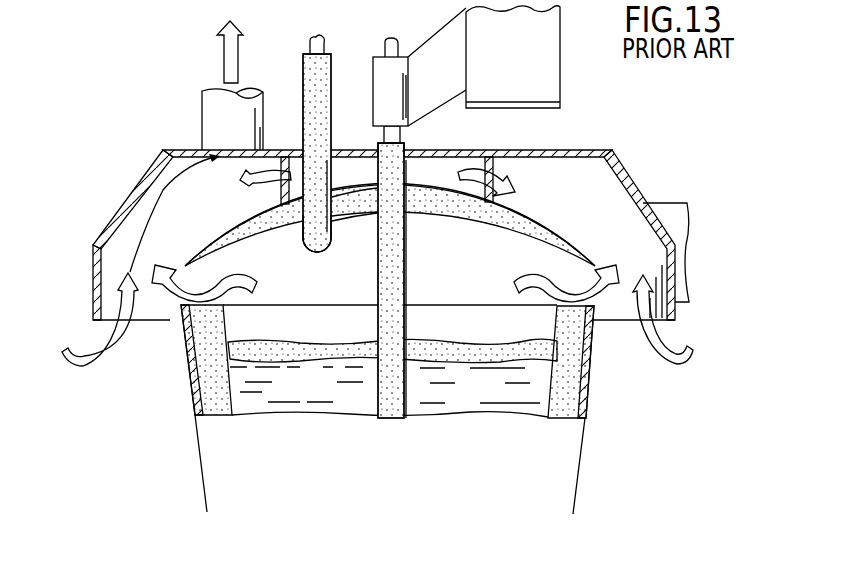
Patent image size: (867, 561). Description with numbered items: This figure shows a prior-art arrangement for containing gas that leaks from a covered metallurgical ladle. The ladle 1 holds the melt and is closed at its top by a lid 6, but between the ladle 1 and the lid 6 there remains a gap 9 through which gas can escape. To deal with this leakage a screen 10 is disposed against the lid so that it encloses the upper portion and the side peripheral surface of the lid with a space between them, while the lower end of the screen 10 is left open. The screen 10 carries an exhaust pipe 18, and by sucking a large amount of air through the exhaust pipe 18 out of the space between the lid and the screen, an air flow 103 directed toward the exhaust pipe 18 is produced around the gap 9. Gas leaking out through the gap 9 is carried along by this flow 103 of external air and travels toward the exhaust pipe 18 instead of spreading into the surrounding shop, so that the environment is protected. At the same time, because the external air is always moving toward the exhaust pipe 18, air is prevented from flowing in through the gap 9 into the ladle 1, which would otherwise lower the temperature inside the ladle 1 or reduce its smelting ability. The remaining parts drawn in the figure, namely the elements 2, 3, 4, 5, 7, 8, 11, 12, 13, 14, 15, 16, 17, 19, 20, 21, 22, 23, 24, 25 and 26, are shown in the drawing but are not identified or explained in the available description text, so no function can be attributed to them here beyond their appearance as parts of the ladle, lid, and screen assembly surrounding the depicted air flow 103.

The ladle 1 is at (568, 467).
The crucible refractory wall 2 is at (535, 396).
The slag layer 3 is at (545, 351).
The hood 4 is at (365, 235).
The side wall section 5 is at (673, 212).
The lid 6 is at (557, 225).
The arched cover 7 is at (500, 219).
The gap 8 is at (583, 303).
The gap 9 is at (590, 274).
The screen 10 is at (133, 188).
The hood roof plate 11 is at (349, 150).
The cover section 12 is at (390, 225).
The gas flow 13 is at (484, 167).
The support strip 14 is at (490, 176).
The hood side wall 15 is at (93, 278).
The hood bottom edge 16 is at (157, 313).
The hood interior space 17 is at (182, 233).
The exhaust pipe 18 is at (204, 118).
The cover segment 19 is at (373, 214).
The electrode collar 20 is at (408, 151).
The electrode tip 21 is at (302, 222).
The support strip 22 is at (284, 150).
The center electrode 23 is at (416, 270).
The electrode feed apparatus 24 is at (448, 50).
The side electrode 25 is at (297, 152).
The space under cover 26 is at (362, 292).
The air flow 103 is at (105, 374).